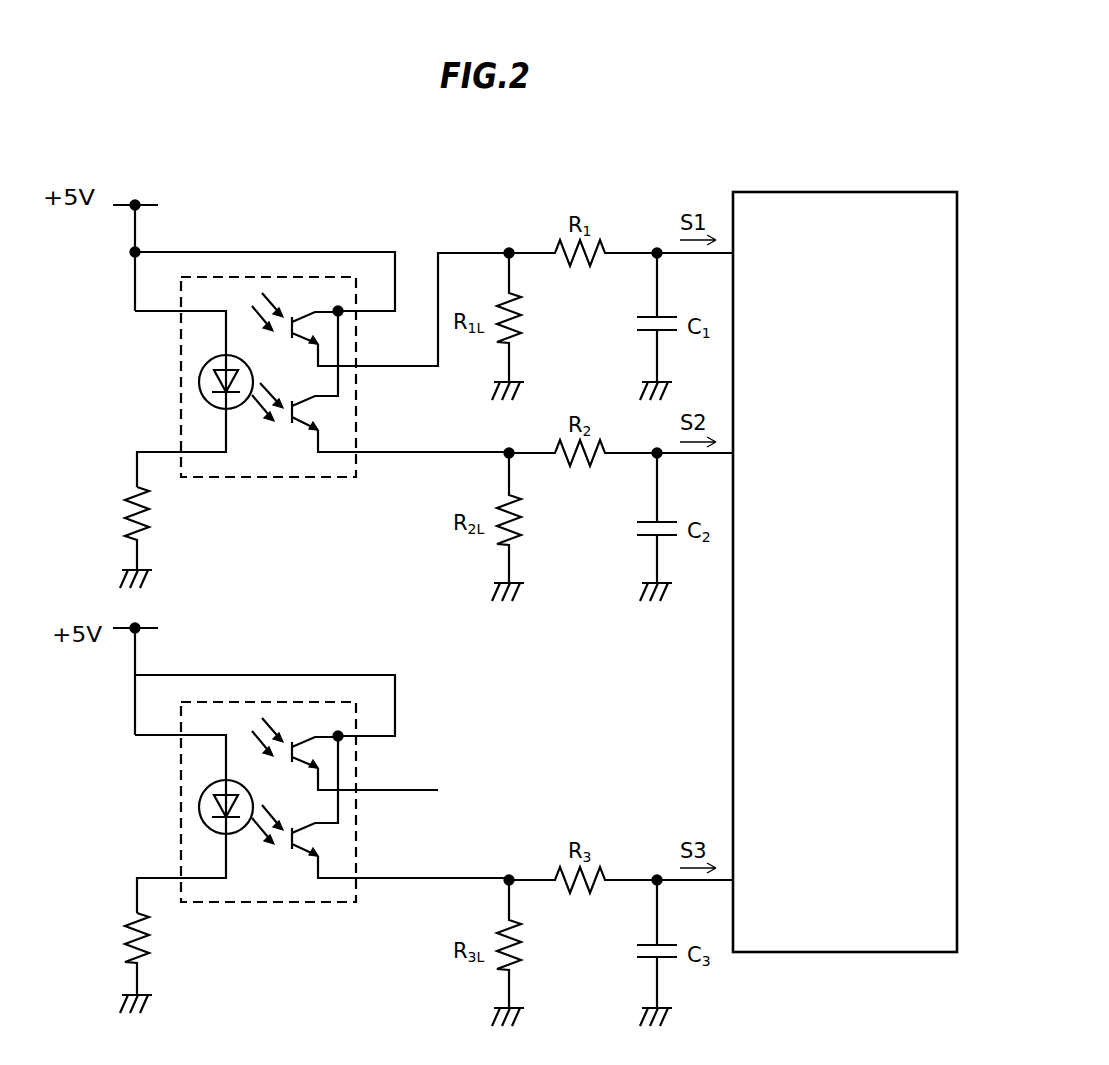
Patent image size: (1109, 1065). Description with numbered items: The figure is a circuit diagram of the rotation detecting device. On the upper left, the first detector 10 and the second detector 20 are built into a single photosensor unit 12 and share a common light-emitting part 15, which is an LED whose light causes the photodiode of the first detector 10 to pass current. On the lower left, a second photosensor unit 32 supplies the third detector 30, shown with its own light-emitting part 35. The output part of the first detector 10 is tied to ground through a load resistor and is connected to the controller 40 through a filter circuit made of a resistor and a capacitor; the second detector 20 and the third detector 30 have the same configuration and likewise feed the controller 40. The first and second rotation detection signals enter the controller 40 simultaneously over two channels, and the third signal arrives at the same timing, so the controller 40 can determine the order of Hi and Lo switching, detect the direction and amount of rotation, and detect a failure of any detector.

The first detector 10 is at (298, 318).
The photosensor unit 12 is at (215, 278).
The light-emitting part 15 is at (199, 381).
The second detector 20 is at (300, 425).
The third detector 30 is at (300, 850).
The photosensor unit 32 is at (215, 703).
The light emitting diode of second sensor 35 is at (199, 808).
The controller 40 is at (846, 190).